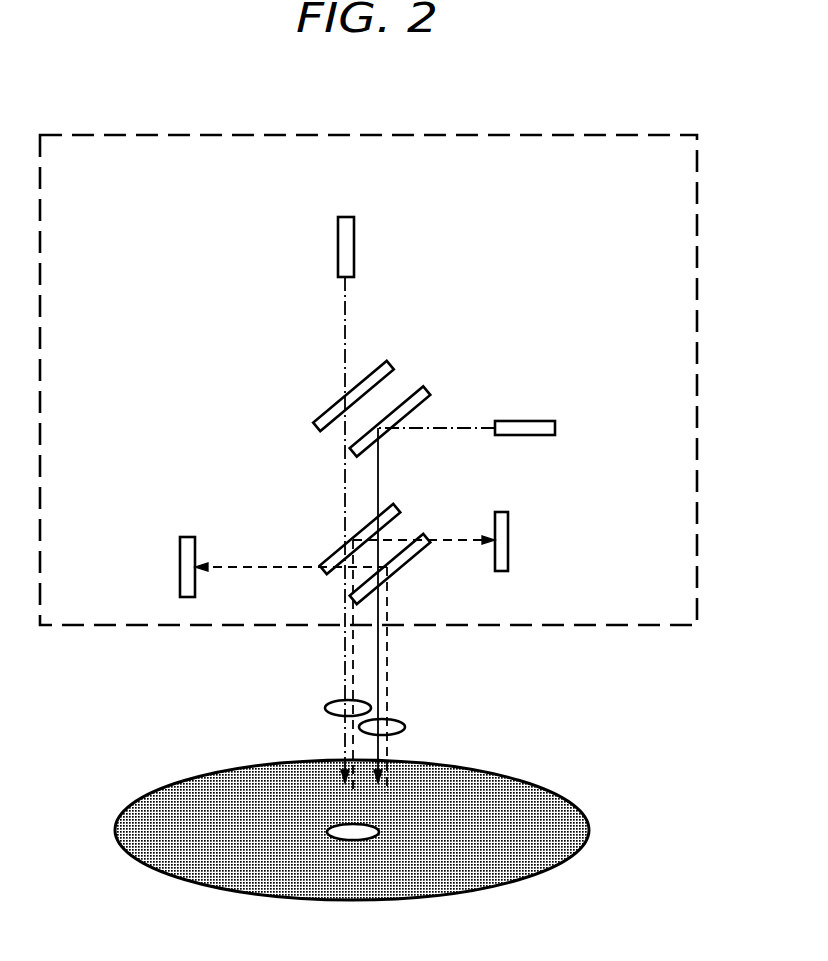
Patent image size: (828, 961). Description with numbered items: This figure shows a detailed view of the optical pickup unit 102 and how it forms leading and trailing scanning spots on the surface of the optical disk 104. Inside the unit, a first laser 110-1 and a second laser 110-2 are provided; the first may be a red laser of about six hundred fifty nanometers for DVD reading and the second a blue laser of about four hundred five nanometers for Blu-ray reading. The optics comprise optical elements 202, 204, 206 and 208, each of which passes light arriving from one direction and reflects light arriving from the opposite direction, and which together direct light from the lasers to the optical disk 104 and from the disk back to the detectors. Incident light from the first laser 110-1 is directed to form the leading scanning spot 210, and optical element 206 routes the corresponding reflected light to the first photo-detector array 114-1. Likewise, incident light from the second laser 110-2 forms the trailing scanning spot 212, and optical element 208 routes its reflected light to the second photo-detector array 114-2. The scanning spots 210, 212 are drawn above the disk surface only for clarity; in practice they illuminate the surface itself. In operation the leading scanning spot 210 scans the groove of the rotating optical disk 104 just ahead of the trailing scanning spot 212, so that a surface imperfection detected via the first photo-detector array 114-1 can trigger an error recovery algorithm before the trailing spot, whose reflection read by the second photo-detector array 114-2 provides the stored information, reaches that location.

The optical pickup unit 102 is at (245, 135).
The first laser 110-1 is at (338, 247).
The second laser 110-2 is at (555, 428).
The optical element 202 is at (327, 412).
The optical element 204 is at (427, 392).
The optical element 206 is at (330, 568).
The optical element 208 is at (408, 565).
The first photo-detector array 114-1 is at (508, 540).
The second photo-detector array 114-2 is at (180, 567).
The leading scanning spot 210 is at (325, 708).
The trailing scanning spot 212 is at (405, 727).
The optical disk 104 is at (563, 797).